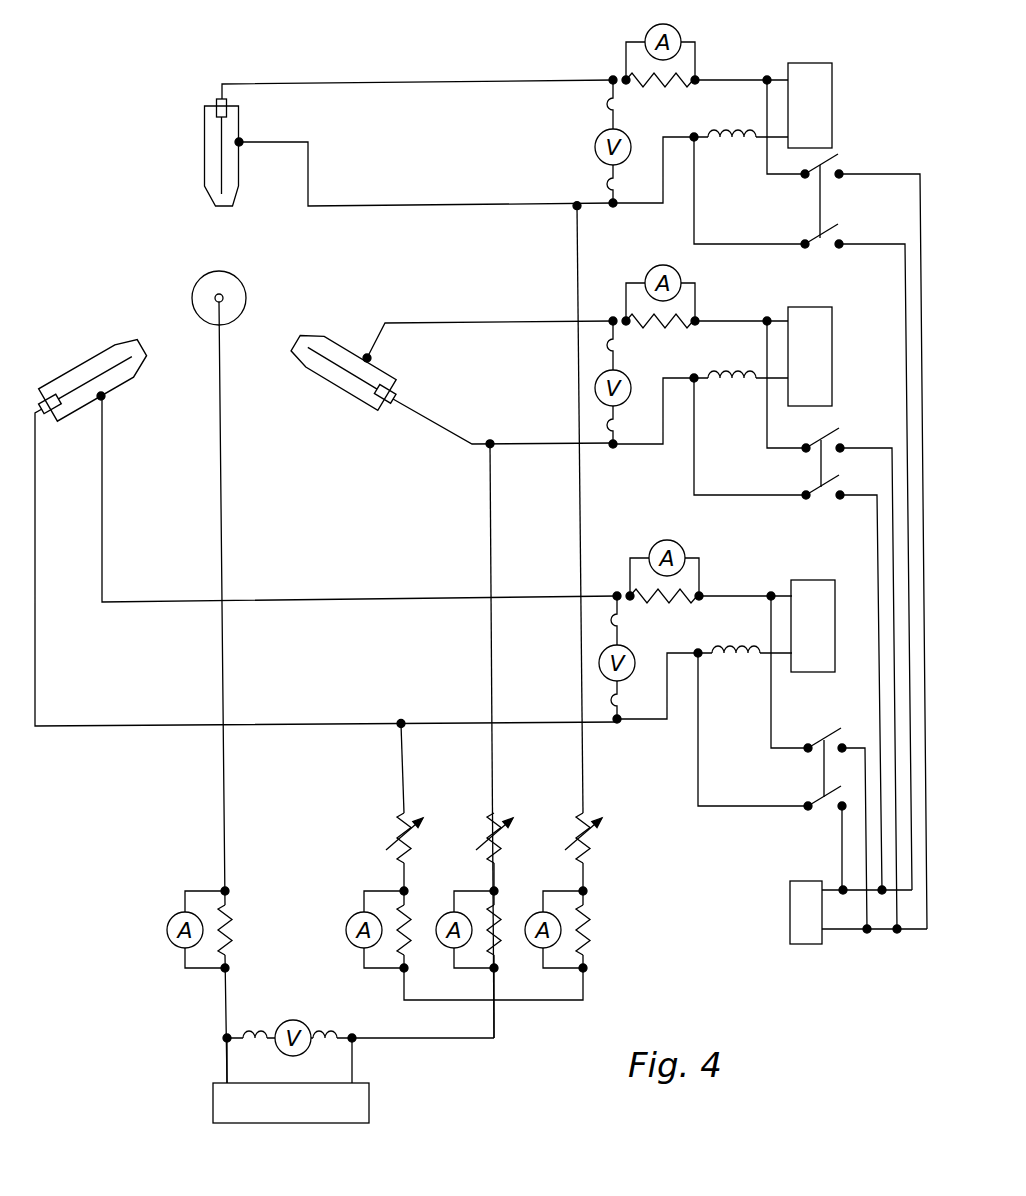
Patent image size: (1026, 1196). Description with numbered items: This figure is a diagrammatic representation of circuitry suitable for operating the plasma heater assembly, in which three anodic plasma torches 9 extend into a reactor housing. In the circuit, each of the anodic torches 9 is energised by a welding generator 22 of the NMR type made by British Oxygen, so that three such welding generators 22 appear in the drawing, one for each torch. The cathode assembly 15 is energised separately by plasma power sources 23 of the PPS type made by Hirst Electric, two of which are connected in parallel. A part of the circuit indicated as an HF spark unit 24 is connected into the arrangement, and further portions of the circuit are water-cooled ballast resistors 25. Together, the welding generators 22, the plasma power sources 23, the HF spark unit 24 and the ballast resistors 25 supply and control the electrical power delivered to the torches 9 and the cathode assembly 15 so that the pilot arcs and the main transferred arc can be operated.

The anodic plasma torch 9 is at (240, 174).
The cathode assembly 15 is at (242, 282).
The welding generator 22 is at (826, 103).
The plasma power source 23 is at (373, 1083).
The HF spark unit 24 is at (790, 908).
The water-cooled ballast resistor 25 is at (572, 823).